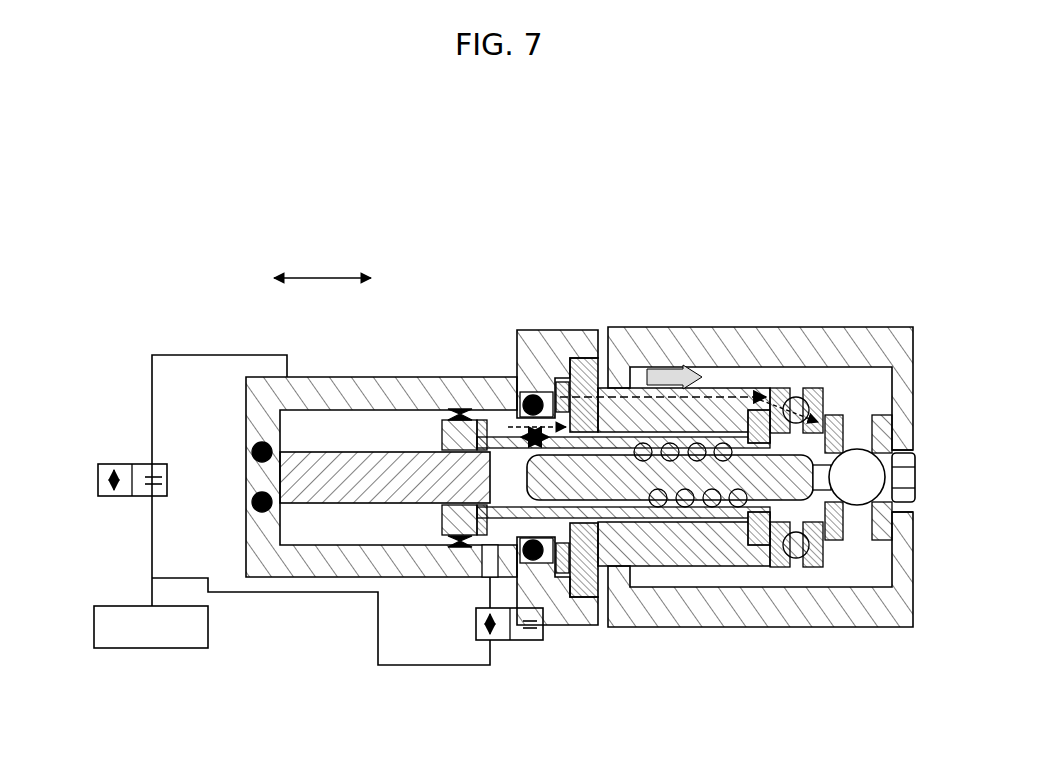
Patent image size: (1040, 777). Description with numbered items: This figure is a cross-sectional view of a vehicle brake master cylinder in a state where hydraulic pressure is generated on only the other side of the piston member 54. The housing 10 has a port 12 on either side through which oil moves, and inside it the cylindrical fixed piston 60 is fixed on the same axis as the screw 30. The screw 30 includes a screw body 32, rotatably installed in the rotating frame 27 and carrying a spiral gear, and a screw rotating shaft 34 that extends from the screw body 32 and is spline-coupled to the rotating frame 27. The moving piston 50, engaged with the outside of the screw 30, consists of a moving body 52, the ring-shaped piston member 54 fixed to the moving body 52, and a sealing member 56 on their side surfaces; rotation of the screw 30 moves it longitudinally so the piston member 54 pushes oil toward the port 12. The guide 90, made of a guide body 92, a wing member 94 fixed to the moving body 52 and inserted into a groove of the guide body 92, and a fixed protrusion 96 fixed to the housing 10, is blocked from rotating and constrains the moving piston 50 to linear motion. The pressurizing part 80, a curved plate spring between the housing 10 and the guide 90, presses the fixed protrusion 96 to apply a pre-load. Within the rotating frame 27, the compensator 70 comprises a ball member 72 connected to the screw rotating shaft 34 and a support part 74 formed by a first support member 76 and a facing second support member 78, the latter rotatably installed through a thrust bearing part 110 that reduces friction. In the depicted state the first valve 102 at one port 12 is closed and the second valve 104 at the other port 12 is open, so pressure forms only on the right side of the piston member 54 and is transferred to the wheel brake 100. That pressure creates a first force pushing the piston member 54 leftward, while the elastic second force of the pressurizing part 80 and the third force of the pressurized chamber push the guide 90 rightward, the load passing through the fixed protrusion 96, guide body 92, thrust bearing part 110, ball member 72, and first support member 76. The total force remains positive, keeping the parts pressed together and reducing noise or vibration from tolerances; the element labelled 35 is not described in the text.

The housing 10 is at (389, 343).
The port 12 is at (290, 378).
The rotating frame 27 is at (727, 600).
The screw 30 is at (512, 493).
The screw body 32 is at (628, 520).
The screw rotating shaft 34 is at (894, 448).
The adjusting nut 35 is at (906, 480).
The moving piston 50 is at (428, 446).
The moving body 52 is at (641, 387).
The piston member 54 is at (456, 406).
The sealing member 56 is at (482, 418).
The fixed piston 60 is at (352, 486).
The compensator 70 is at (839, 553).
The ball member 72 is at (856, 506).
The support part 74 is at (991, 331).
The first support member 76 is at (882, 413).
The second support member 78 is at (842, 412).
The pressurizing part 80 is at (542, 350).
The guide 90 is at (747, 375).
The guide body 92 is at (750, 409).
The wing member 94 is at (795, 396).
The fixed protrusion 96 is at (574, 357).
The wheel brake 100 is at (94, 628).
The first valve 102 is at (98, 480).
The second valve 104 is at (535, 642).
The thrust bearing part 110 is at (818, 390).